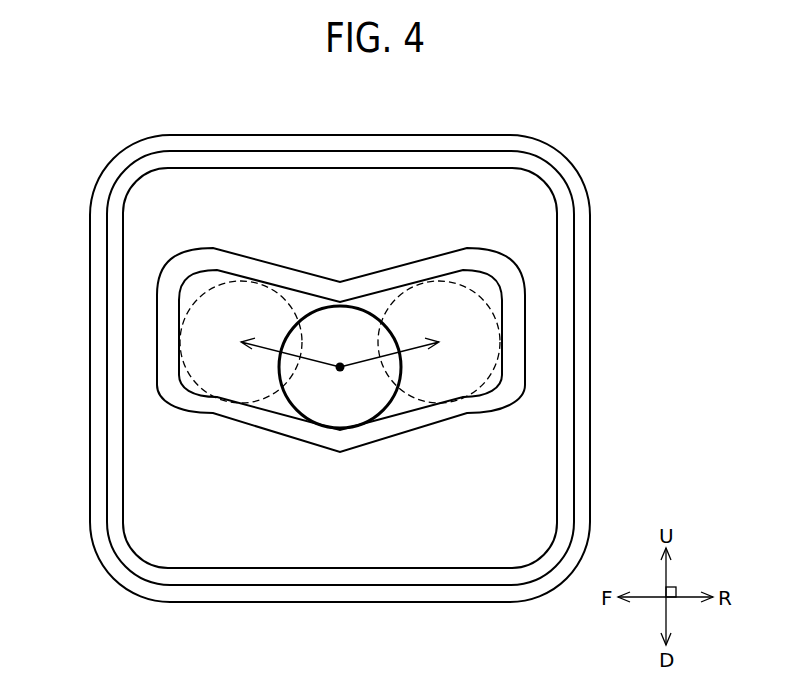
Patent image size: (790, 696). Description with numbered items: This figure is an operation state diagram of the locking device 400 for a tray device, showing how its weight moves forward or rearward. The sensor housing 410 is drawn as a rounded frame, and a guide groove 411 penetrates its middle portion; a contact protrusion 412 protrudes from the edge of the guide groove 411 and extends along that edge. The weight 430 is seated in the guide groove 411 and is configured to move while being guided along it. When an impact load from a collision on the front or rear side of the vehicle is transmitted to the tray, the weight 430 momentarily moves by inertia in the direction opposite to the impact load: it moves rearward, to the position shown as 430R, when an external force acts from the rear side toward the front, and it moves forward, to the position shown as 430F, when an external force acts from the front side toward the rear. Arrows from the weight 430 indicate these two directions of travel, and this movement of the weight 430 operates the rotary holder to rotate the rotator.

The locking device 400 is at (360, 368).
The sensor housing 410 is at (345, 188).
The guide groove 411 is at (300, 302).
The contact protrusion 412 is at (165, 323).
The weight 430 is at (300, 413).
The weight moved forward 430F is at (263, 397).
The weight moved rearward 430R is at (417, 398).